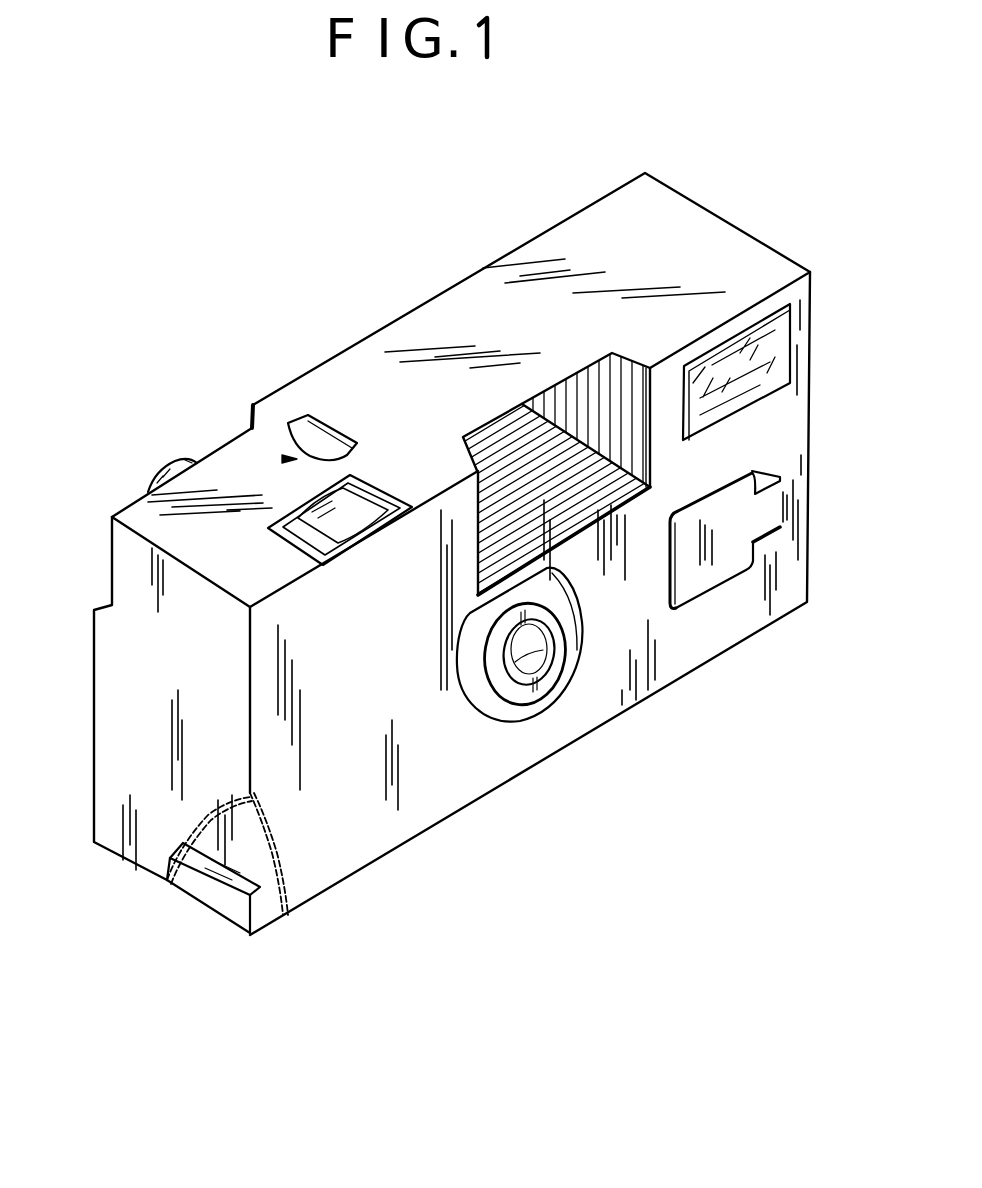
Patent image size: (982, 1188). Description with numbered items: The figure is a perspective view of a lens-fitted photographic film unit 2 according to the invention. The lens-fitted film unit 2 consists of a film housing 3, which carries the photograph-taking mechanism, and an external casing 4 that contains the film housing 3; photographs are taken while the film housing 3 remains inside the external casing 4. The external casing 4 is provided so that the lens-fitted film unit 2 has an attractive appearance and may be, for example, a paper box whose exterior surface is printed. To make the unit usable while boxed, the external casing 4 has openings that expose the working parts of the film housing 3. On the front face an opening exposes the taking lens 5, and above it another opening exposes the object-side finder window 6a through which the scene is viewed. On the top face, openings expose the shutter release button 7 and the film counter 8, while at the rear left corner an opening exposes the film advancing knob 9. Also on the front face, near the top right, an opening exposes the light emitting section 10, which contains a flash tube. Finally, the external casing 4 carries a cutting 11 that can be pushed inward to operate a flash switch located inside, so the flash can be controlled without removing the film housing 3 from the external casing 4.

The lens-fitted film unit 2 is at (552, 247).
The film housing 3 is at (180, 895).
The external casing 4 is at (276, 918).
The taking lens 5 is at (535, 652).
The object-side finder window 6a is at (538, 440).
The shutter release button 7 is at (350, 518).
The film counter 8 is at (337, 443).
The film advancing knob 9 is at (178, 460).
The light emitting section 10 is at (778, 366).
The cutting 11 is at (712, 578).